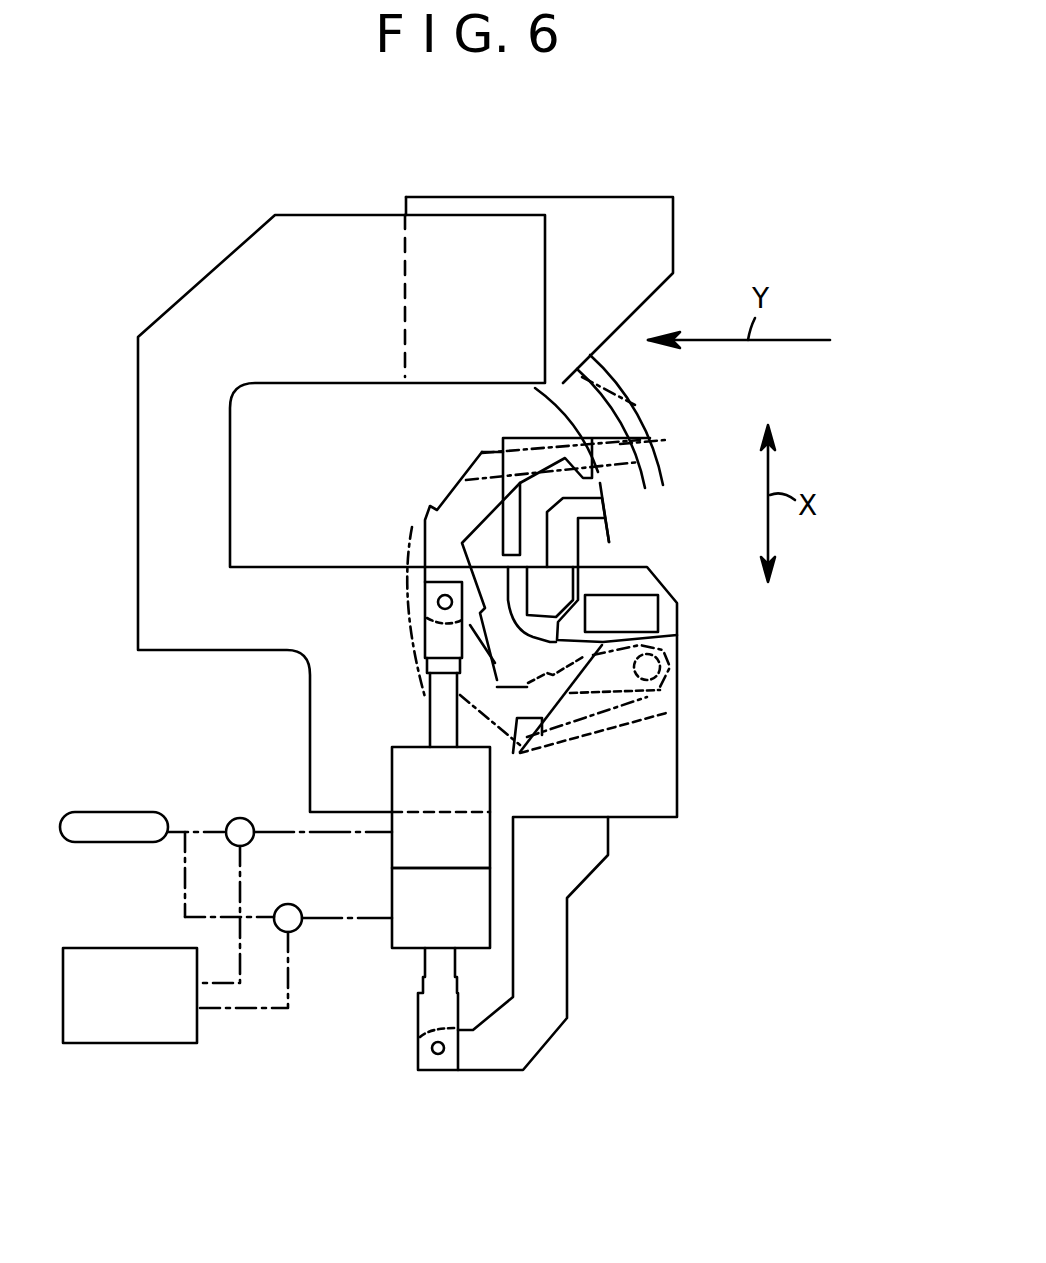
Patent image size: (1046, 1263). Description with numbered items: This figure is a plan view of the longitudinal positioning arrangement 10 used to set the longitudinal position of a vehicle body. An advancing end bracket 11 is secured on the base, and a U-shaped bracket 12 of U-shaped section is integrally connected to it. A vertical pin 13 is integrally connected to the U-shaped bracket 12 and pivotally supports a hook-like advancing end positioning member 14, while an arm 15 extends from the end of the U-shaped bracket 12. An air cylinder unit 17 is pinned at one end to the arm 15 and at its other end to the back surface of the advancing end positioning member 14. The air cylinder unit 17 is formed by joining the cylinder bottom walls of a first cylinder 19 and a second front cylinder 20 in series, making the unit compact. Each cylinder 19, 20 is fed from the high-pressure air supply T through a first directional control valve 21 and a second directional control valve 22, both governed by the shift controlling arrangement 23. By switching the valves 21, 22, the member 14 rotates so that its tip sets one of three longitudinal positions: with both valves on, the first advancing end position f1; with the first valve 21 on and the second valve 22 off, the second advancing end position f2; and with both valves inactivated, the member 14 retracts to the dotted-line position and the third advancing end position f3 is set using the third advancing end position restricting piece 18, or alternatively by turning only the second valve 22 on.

The longitudinal positioning arrangement 10 is at (717, 207).
The advancing end bracket 11 is at (354, 226).
The U-shaped bracket 12 is at (677, 752).
The vertical pin 13 is at (668, 662).
The advancing end positioning member 14 is at (482, 452).
The arm 15 is at (563, 935).
The air cylinder unit 17 is at (378, 881).
The third advancing end position restricting piece 18 is at (567, 550).
The first cylinder 19 is at (405, 775).
The second front cylinder 20 is at (408, 945).
The first directional control valve 21 is at (257, 808).
The second directional control valve 22 is at (297, 928).
The shift controlling arrangement 23 is at (122, 958).
The high-pressure air supply T is at (135, 818).
The first advancing end position f1 is at (630, 368).
The second advancing end position f2 is at (650, 428).
The third advancing end position f3 is at (600, 493).